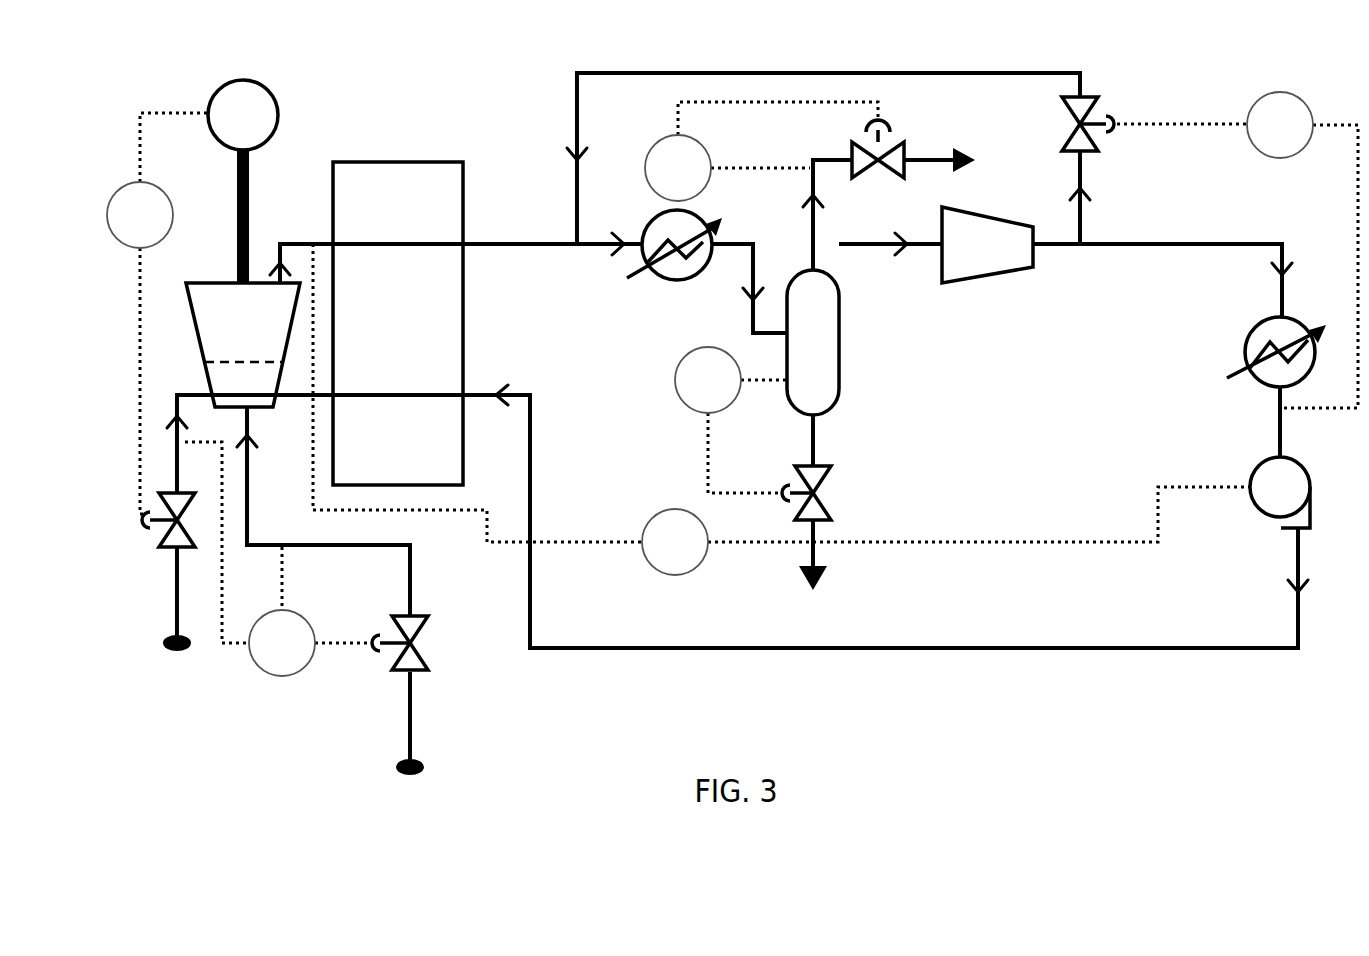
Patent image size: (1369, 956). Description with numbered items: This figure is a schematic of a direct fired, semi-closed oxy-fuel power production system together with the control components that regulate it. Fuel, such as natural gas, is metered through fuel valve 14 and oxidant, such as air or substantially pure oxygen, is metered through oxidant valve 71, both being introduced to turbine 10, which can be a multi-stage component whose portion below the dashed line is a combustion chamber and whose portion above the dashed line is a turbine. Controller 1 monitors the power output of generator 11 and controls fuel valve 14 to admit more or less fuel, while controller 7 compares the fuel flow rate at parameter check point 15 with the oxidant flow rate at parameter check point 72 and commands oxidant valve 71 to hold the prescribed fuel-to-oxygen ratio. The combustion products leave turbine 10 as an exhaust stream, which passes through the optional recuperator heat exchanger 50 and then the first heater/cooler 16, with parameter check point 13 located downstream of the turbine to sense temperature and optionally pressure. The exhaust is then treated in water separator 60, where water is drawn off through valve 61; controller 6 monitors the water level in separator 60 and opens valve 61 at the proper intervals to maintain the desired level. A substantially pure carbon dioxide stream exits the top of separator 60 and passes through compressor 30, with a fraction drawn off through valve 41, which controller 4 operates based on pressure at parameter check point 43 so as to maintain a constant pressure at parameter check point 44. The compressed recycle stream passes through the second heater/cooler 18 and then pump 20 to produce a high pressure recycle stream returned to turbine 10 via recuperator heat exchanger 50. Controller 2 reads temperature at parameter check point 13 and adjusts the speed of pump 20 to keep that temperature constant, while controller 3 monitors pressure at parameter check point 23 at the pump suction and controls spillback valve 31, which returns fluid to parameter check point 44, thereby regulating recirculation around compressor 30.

The controller 1 is at (140, 215).
The controller 2 is at (675, 542).
The controller 3 is at (1280, 125).
The controller 4 is at (678, 168).
The controller 6 is at (708, 380).
The controller 7 is at (282, 643).
The turbine 10 is at (243, 345).
The generator 11 is at (243, 181).
The parameter check point 13 is at (306, 247).
The fuel valve 14 is at (177, 520).
The parameter check point 15 is at (163, 444).
The first heater/cooler 16 is at (674, 260).
The second heater/cooler 18 is at (1269, 352).
The pump 20 is at (1280, 492).
The parameter check point 23 is at (1264, 422).
The compressor 30 is at (987, 245).
The spillback valve 31 is at (1078, 124).
The valve 41 is at (878, 159).
The parameter check point 43 is at (825, 204).
The parameter check point 44 is at (552, 262).
The recuperator heat exchanger 50 is at (398, 323).
The water separator 60 is at (813, 342).
The valve 61 is at (820, 493).
The oxidant valve 71 is at (412, 643).
The parameter check point 72 is at (328, 476).